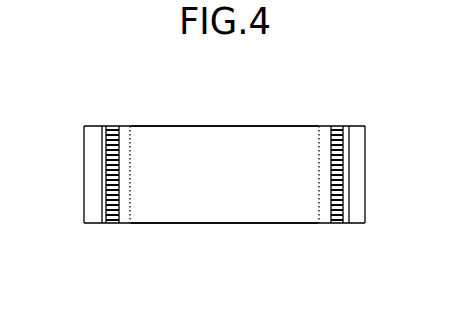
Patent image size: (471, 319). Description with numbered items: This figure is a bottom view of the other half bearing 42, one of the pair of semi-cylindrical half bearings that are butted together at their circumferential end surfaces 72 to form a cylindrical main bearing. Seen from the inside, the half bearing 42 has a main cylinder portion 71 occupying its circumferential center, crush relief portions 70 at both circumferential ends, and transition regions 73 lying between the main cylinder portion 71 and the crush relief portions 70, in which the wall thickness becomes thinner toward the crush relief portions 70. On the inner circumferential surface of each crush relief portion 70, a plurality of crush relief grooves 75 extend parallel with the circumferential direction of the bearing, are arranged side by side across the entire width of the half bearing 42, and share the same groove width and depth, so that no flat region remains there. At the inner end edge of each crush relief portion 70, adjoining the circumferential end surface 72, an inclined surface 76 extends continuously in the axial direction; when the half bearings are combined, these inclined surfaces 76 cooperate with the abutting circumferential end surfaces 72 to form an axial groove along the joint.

The half bearing 42 is at (341, 92).
The crush relief portion 70 is at (112, 224).
The main cylinder portion 71 is at (218, 224).
The circumferential end surface 72 is at (93, 218).
The transition region 73 is at (124, 125).
The crush relief groove 75 is at (105, 147).
The inclined surface 76 is at (101, 224).